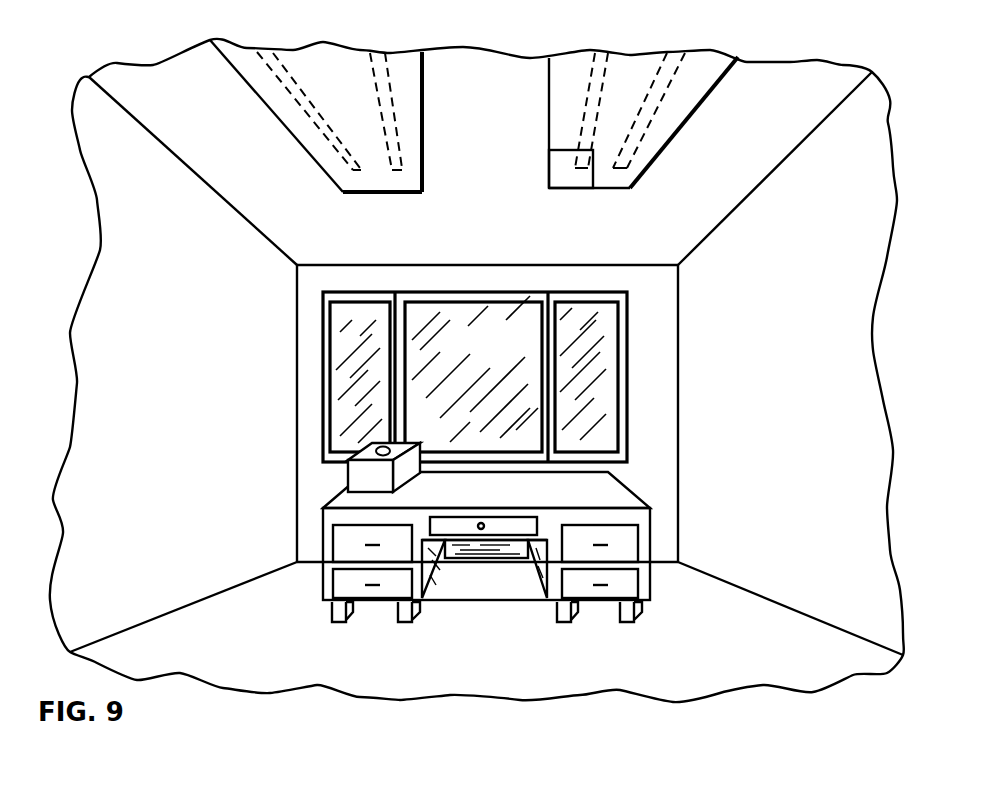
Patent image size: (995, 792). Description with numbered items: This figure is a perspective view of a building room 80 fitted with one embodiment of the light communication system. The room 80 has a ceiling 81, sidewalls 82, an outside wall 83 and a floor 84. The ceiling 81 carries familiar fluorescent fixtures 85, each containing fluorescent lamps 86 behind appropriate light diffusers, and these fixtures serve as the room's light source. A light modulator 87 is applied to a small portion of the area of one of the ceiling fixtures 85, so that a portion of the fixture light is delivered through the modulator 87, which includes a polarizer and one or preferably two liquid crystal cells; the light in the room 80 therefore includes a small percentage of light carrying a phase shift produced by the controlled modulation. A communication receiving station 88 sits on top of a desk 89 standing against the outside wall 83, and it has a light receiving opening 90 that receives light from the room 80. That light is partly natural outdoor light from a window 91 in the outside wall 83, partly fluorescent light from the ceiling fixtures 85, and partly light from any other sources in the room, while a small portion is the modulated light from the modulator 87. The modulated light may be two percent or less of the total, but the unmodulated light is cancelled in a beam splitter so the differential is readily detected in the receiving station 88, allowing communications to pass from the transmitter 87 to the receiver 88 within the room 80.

The room 80 is at (881, 322).
The ceiling 81 is at (458, 136).
The sidewalls 82 is at (169, 401).
The outside wall 83 is at (478, 291).
The floor 84 is at (468, 651).
The fluorescent fixtures 85 is at (398, 63).
The fluorescent lamps 86 is at (373, 53).
The light modulator 87 is at (563, 182).
The communication receiving station 88 is at (407, 470).
The desk 89 is at (529, 503).
The light receiving opening 90 is at (377, 454).
The window 91 is at (439, 370).